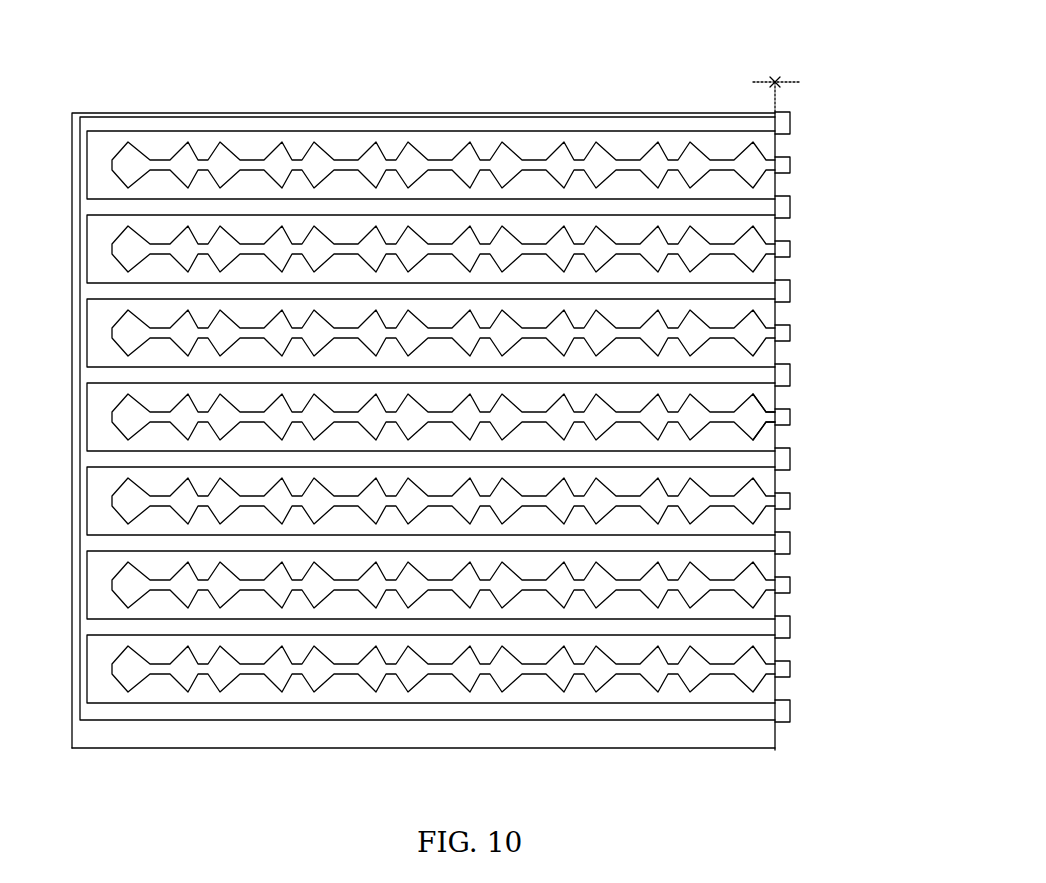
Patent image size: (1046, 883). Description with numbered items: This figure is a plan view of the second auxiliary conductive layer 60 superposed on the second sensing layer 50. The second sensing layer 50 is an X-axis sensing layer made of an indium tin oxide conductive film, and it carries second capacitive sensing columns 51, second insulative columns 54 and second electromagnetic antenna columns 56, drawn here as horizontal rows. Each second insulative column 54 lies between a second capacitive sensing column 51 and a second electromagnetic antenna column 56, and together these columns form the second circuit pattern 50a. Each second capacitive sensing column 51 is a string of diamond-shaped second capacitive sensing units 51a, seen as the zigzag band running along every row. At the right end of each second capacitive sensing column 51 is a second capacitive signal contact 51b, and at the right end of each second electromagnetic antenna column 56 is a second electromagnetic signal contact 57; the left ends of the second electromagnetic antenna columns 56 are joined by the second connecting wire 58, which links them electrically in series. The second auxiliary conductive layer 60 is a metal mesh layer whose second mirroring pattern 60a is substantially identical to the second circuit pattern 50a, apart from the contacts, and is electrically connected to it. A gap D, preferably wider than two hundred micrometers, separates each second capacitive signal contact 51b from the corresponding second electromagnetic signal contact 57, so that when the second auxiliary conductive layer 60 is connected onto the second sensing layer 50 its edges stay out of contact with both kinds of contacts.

The second connecting wire 58 is at (83, 152).
The second electromagnetic antenna column 56 is at (118, 127).
The second capacitive sensing column 51 is at (509, 368).
The second capacitive sensing unit 51a is at (602, 155).
The second capacitive signal contact 51b is at (790, 165).
The second electromagnetic signal contact 57 is at (790, 121).
The second insulative column 54 is at (768, 400).
The second sensing layer 50 is at (866, 431).
The second circuit pattern 50a is at (802, 578).
The second auxiliary conductive layer 60 is at (500, 708).
The second mirroring pattern 60a is at (775, 740).
The gap D is at (775, 80).